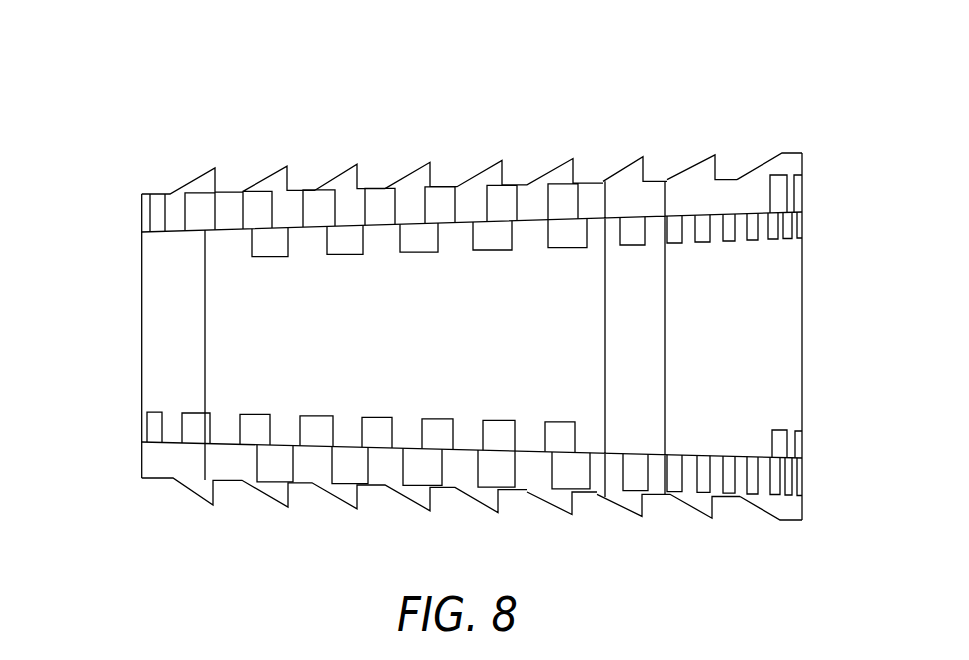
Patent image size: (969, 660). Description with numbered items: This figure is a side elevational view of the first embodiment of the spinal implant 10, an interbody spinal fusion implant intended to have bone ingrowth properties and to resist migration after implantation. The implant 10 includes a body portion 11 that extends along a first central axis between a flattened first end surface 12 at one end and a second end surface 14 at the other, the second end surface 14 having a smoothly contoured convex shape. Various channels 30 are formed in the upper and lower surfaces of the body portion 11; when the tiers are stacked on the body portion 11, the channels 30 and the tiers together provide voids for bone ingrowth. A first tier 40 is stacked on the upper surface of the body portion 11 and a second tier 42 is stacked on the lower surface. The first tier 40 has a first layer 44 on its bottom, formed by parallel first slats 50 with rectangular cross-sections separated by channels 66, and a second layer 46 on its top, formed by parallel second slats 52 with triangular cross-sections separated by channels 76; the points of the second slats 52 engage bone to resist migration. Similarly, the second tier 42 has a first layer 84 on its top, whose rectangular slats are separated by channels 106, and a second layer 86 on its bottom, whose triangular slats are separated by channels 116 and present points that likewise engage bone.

The implant 10 is at (858, 452).
The body portion 11 is at (732, 347).
The first end surface 12 is at (153, 298).
The second end surface 14 is at (778, 303).
The channels 30 is at (333, 245).
The first tier 40 is at (803, 192).
The second tier 42 is at (803, 483).
The first layer 44 is at (727, 193).
The second layer 46 is at (635, 147).
The first slats 50 is at (337, 197).
The second slats 52 is at (493, 167).
The channels 66 is at (245, 197).
The channels 76 is at (382, 175).
The first layer 84 is at (578, 490).
The second layer 86 is at (643, 508).
The channels 106 is at (343, 470).
The channels 116 is at (375, 495).